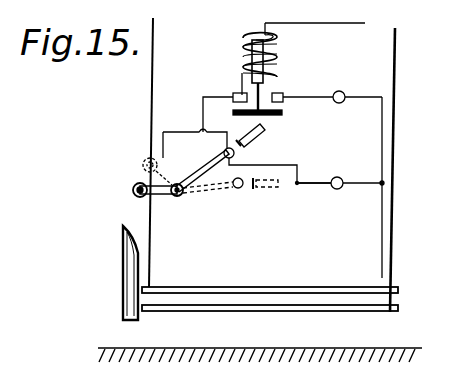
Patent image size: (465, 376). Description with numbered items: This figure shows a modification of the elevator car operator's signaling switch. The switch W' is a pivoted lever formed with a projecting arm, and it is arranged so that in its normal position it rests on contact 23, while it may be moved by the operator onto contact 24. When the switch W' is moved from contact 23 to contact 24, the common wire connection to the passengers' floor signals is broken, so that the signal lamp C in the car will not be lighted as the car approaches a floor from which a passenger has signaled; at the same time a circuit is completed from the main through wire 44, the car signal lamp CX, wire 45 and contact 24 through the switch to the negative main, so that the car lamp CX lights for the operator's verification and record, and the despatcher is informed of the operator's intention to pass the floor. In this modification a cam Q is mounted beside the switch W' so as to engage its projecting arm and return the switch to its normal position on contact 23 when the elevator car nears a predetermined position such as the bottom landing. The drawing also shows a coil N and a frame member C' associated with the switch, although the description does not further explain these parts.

The contact 23 is at (238, 188).
The contact 24 is at (235, 154).
The wire 44 is at (382, 243).
The wire 45 is at (321, 187).
The signal lamp C is at (332, 84).
The car signal lamp CX is at (346, 170).
The frame C' is at (128, 152).
The electromagnet coil N is at (246, 52).
The cam Q is at (132, 260).
The switch W' is at (181, 170).